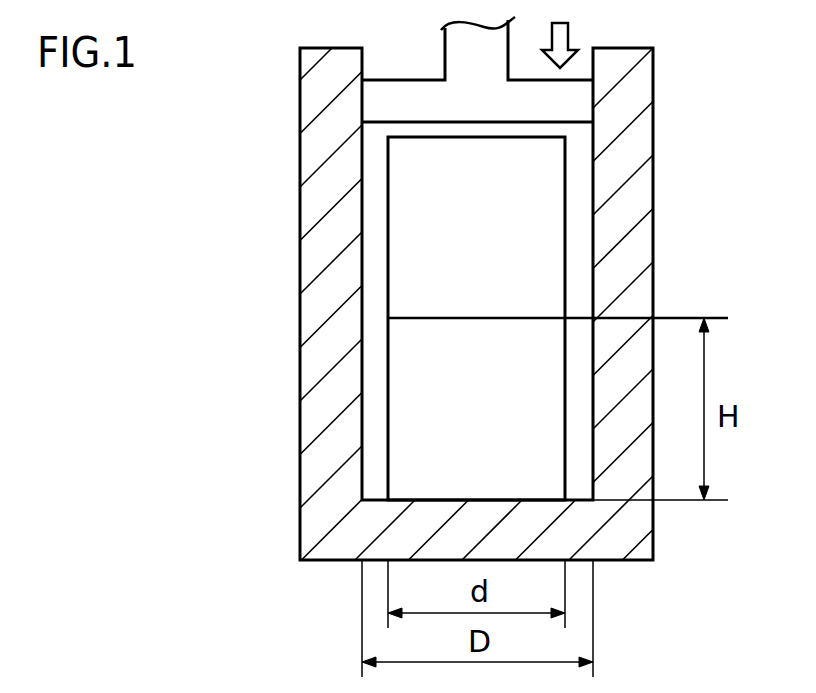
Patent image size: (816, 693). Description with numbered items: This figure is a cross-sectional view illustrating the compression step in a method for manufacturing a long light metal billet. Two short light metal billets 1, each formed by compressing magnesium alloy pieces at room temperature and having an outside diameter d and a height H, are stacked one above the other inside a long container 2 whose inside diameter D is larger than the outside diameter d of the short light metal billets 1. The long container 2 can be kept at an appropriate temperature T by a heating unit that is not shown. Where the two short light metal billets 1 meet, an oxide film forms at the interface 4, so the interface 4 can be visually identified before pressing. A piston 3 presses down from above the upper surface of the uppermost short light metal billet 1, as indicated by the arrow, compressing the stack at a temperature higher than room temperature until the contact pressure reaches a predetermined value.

The short light metal billet 1 is at (437, 218).
The long container 2 is at (300, 106).
The piston 3 is at (565, 103).
The interface 4 is at (452, 318).